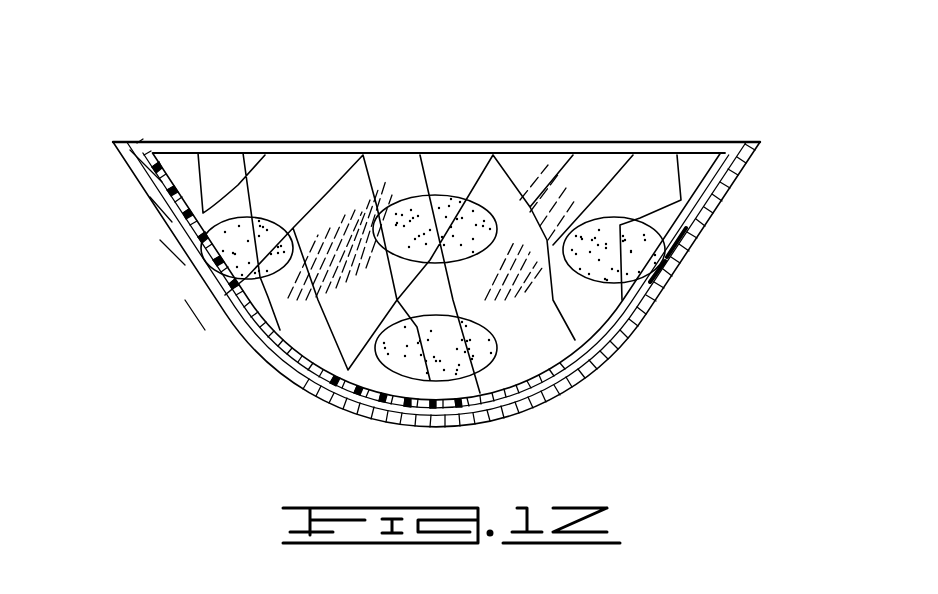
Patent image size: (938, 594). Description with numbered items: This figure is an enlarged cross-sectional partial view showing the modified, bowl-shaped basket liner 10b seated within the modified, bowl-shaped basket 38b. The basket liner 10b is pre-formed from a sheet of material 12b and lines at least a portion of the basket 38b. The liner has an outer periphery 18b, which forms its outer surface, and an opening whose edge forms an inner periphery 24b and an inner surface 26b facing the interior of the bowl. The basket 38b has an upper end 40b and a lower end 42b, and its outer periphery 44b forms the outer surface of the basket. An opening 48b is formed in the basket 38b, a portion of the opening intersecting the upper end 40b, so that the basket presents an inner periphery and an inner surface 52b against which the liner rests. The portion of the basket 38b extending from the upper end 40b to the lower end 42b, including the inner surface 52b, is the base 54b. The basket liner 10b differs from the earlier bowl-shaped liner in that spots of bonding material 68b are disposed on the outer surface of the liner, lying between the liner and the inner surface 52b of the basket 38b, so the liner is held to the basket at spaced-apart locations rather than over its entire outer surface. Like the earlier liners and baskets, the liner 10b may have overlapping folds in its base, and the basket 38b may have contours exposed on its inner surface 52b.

The basket liner 10b is at (168, 124).
The upper end 40b is at (312, 142).
The sheet of material 12b is at (425, 145).
The inner periphery 24b is at (506, 162).
The opening 48b is at (619, 141).
The basket 38b is at (733, 187).
The inner surface 26b is at (222, 233).
The inner surface 52b is at (228, 278).
The outer periphery 18b is at (281, 339).
The lower end 42b is at (423, 428).
The bonding material 68b is at (650, 270).
The outer periphery 44b is at (653, 307).
The base 54b is at (618, 350).